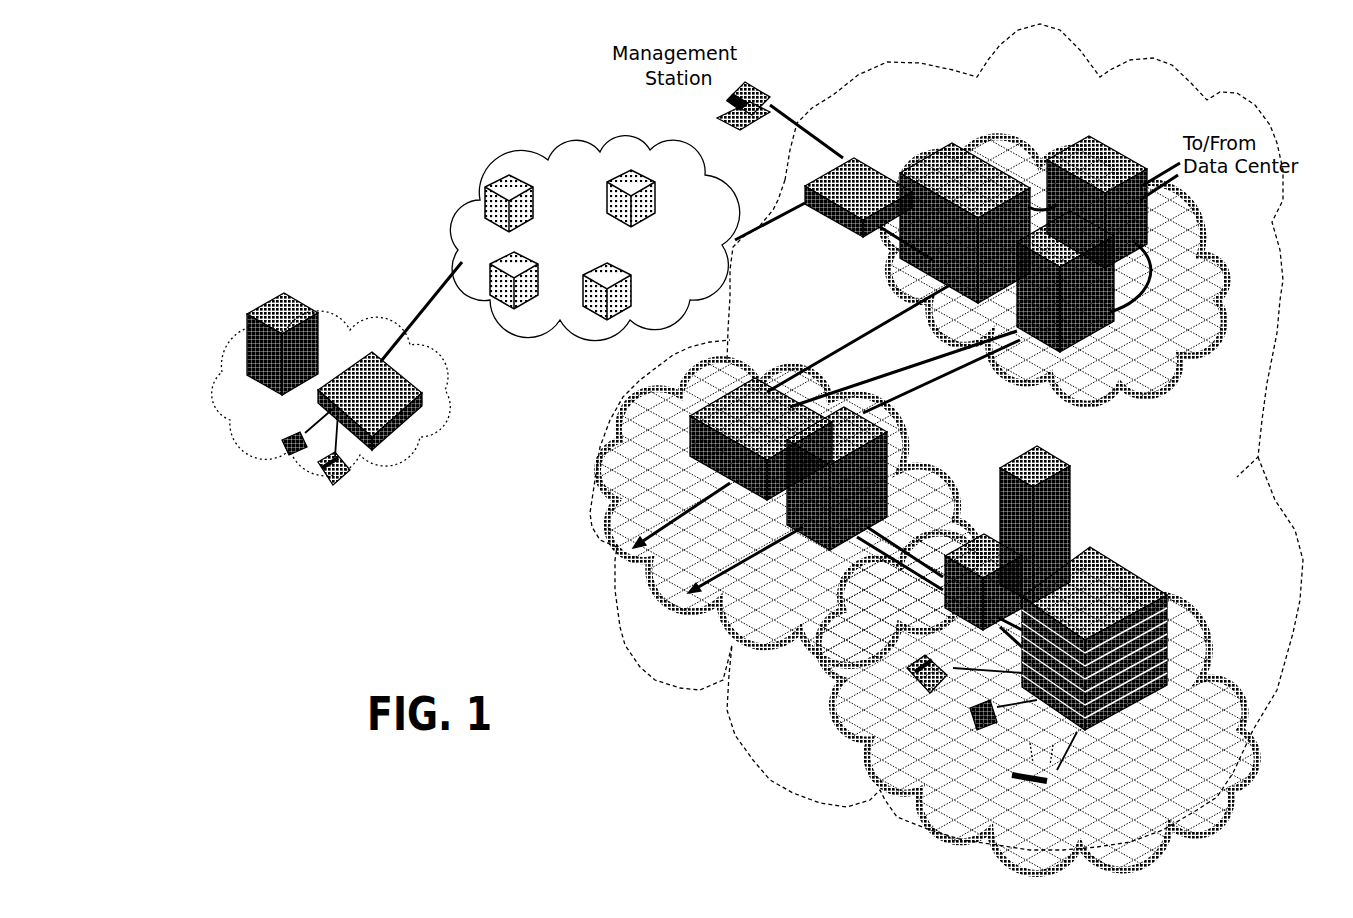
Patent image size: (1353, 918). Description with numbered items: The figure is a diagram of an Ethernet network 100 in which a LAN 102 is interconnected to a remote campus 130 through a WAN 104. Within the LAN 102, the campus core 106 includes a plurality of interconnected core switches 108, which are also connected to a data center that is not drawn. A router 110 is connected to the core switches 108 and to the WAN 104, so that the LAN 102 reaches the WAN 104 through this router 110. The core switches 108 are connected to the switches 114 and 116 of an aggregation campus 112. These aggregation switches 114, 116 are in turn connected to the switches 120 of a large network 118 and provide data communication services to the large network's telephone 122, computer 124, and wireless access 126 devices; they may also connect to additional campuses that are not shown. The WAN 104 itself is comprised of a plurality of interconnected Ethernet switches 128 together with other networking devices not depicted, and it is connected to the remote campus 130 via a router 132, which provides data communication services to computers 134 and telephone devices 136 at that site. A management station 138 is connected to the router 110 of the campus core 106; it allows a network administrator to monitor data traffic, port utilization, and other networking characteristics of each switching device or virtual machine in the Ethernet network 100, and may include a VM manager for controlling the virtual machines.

The Ethernet network 100 is at (1248, 82).
The LAN 102 is at (787, 787).
The WAN 104 is at (518, 157).
The campus core 106 is at (1233, 277).
The core switches 108 is at (987, 160).
The router 110 is at (875, 158).
The aggregation campus 112 is at (917, 523).
The switch 114 is at (773, 373).
The switch 116 is at (888, 482).
The large network 118 is at (1207, 758).
The switches 120 is at (1107, 556).
The telephone 122 is at (907, 687).
The computer 124 is at (963, 730).
The wireless access device 126 is at (1012, 770).
The Ethernet switches 128 is at (533, 189).
The remote campus 130 is at (427, 430).
The router 132 is at (393, 368).
The computers 134 is at (277, 460).
The telephone devices 136 is at (333, 480).
The management station 138 is at (767, 97).